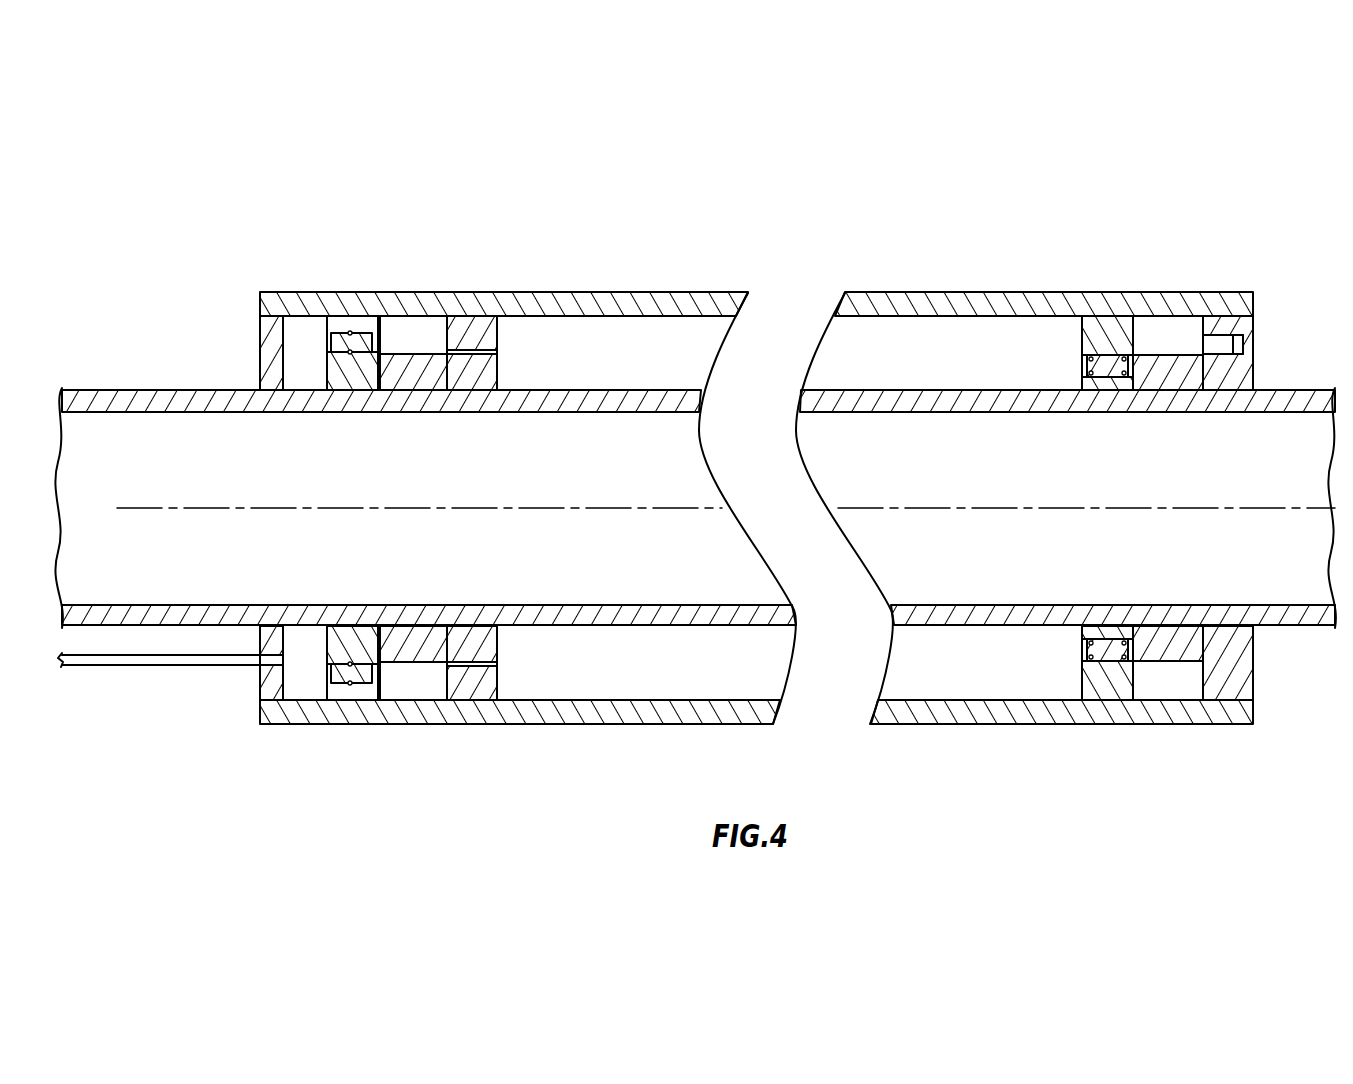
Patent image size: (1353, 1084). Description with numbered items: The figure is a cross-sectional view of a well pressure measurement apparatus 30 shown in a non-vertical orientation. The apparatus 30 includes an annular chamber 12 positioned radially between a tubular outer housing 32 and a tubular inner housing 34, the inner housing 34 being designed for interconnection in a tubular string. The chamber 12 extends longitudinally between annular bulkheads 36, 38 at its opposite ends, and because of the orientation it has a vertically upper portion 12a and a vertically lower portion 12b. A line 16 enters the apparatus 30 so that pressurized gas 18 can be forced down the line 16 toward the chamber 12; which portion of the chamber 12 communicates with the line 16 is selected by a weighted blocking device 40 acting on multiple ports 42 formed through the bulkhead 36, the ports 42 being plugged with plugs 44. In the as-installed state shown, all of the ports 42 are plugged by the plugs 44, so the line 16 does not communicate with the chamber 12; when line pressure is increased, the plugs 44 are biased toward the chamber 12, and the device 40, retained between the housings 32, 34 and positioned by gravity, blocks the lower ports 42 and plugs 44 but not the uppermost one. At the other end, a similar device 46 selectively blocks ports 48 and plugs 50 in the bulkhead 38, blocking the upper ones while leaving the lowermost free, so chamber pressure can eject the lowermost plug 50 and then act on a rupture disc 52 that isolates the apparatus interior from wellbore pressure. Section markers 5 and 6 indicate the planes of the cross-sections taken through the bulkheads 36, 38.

The well pressure measurement apparatus 30 is at (1091, 480).
The tubular outer housing 32 is at (467, 502).
The blocking device 46 is at (1085, 502).
The tubular inner housing 34 is at (1020, 605).
The chamber 12 is at (933, 318).
The upper portion 12a is at (548, 318).
The lower portion 12b is at (612, 690).
The line 16 is at (126, 667).
The pressurized gas 18 is at (288, 683).
The bulkhead 36 is at (348, 702).
The bulkhead 38 is at (1108, 700).
The weighted blocking device 40 is at (423, 353).
The ports 42 is at (290, 502).
The plugs 44 is at (343, 334).
The ports 48 is at (1080, 365).
The plugs 50 is at (1043, 502).
The rupture disc 52 is at (1253, 343).
The section line 5- 5 is at (405, 268).
The section line 6- 6 is at (1168, 268).